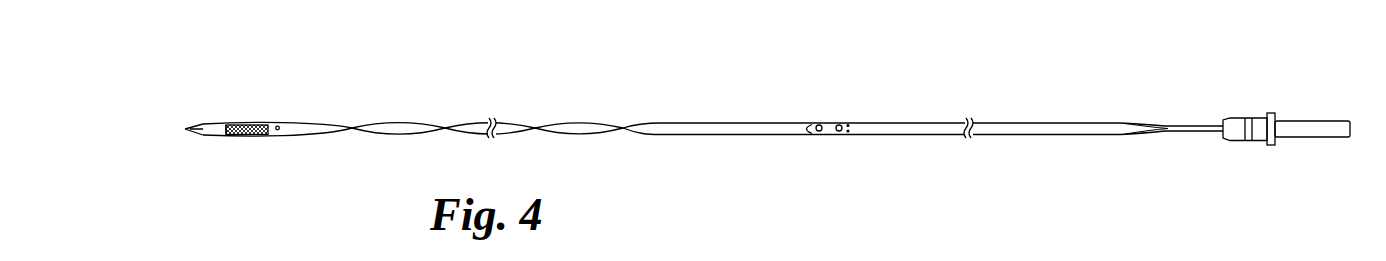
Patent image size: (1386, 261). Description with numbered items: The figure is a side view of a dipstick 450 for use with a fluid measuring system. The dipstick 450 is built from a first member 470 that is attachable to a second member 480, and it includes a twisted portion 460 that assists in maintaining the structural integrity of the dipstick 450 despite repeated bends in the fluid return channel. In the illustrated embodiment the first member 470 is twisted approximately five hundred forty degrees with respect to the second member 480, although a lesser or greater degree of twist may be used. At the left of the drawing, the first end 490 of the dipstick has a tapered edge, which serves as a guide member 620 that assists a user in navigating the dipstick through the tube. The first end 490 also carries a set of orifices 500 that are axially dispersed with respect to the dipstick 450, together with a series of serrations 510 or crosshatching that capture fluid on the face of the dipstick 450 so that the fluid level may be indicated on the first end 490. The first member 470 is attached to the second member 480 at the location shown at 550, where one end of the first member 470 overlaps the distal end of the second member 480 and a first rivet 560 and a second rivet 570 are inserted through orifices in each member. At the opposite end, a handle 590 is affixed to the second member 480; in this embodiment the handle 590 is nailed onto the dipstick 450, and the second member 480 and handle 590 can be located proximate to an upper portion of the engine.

The dipstick 450 is at (803, 52).
The twisted portion 460 is at (481, 84).
The first member 470 is at (717, 122).
The second member 480 is at (1004, 122).
The first end 490 is at (186, 129).
The set of orifices 500 is at (226, 126).
The series of serrations 510 is at (253, 136).
The attachment of first member to second member 550 is at (830, 123).
The first rivet 560 is at (819, 133).
The second rivet 570 is at (841, 133).
The handle 590 is at (1317, 118).
The guide member 620 is at (215, 152).